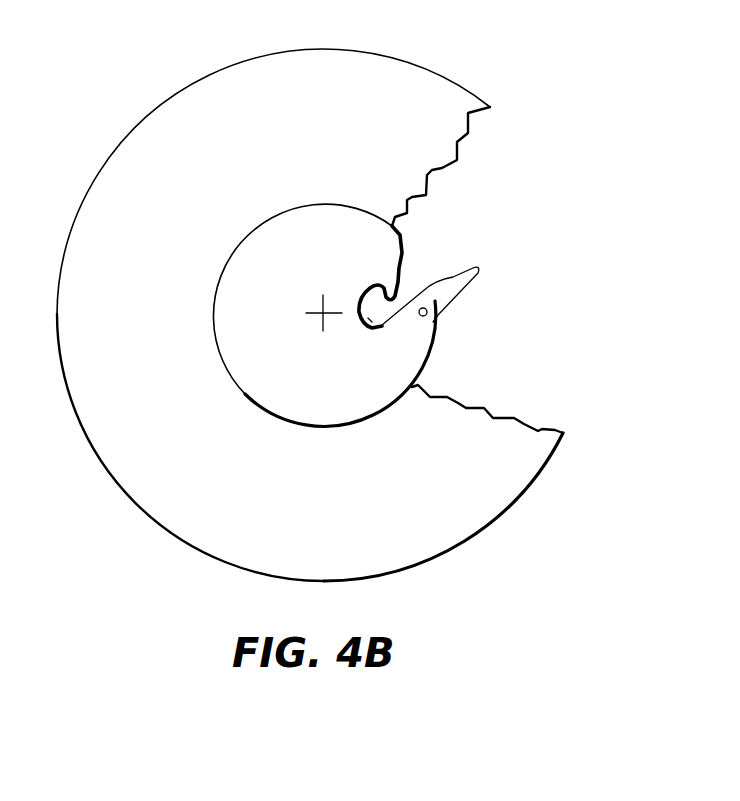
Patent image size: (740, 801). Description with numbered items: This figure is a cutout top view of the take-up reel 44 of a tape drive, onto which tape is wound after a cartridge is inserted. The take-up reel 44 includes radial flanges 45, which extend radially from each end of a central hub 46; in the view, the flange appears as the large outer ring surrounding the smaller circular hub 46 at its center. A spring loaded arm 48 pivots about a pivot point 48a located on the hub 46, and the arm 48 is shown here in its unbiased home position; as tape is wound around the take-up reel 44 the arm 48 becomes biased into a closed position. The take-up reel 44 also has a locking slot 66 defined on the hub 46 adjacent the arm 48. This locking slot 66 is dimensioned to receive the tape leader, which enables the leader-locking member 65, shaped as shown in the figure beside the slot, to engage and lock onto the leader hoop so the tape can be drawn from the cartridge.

The take-up reel 44 is at (294, 315).
The radial flanges 45 is at (163, 438).
The central hub 46 is at (328, 397).
The spring loaded arm 48 is at (478, 270).
The pivot point 48a is at (428, 315).
The leader-locking member 65 is at (392, 294).
The locking slot 66 is at (370, 320).